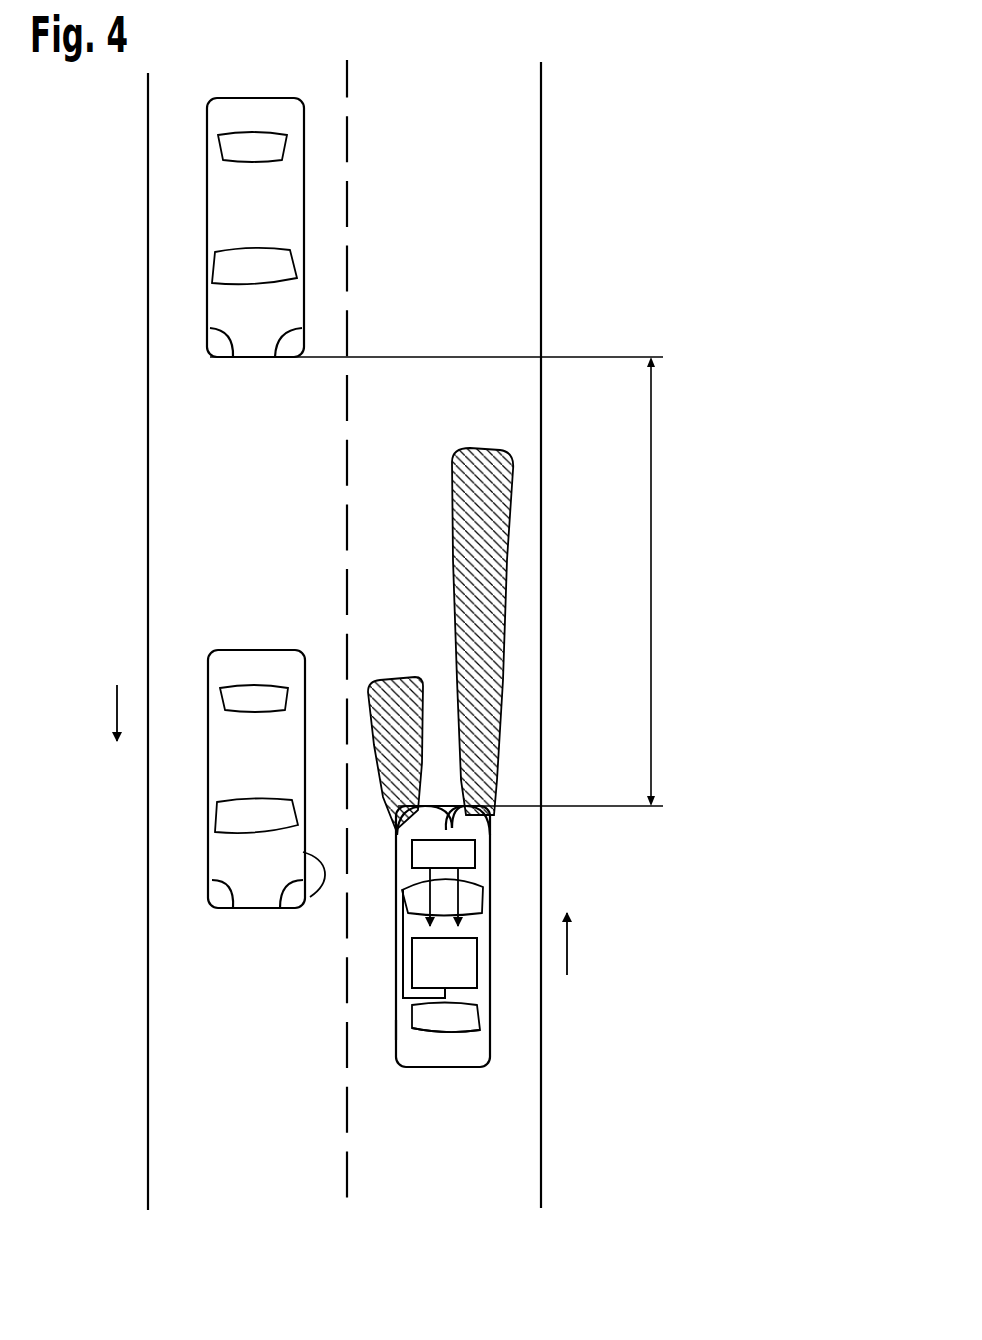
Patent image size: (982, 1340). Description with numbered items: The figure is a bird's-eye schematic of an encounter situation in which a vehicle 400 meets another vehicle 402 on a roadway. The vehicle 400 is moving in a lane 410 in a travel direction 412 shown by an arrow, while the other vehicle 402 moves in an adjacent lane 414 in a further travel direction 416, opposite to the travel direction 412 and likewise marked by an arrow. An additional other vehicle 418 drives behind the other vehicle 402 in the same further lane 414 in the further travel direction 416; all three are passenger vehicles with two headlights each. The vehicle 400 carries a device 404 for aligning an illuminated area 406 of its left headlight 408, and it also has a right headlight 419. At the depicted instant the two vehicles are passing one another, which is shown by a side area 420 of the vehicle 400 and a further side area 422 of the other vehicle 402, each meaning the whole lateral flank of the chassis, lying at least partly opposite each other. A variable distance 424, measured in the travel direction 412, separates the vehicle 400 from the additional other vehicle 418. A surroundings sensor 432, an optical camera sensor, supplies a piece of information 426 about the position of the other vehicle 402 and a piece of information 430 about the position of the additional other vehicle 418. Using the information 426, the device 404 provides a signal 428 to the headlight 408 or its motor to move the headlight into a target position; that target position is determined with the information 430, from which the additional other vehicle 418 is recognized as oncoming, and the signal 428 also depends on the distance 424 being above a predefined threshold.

The vehicle 400 is at (465, 1086).
The other vehicle 402 is at (183, 855).
The device 404 is at (477, 973).
The illuminated area 406 is at (380, 677).
The headlight 408 is at (450, 807).
The lane 410 is at (483, 162).
The travel direction 412 is at (570, 945).
The adjacent lane 414 is at (202, 467).
The further travel direction 416 is at (117, 710).
The additional other vehicle 418 is at (188, 233).
The right headlight 419 is at (483, 807).
The side area 420 is at (394, 1023).
The further side area 422 is at (310, 897).
The distance 424 is at (651, 535).
The information concerning a position of the other vehicle 426 is at (460, 900).
The signal 428 is at (420, 1062).
The information concerning a position of the additional other vehicle 430 is at (403, 890).
The surroundings sensor 432 is at (477, 857).